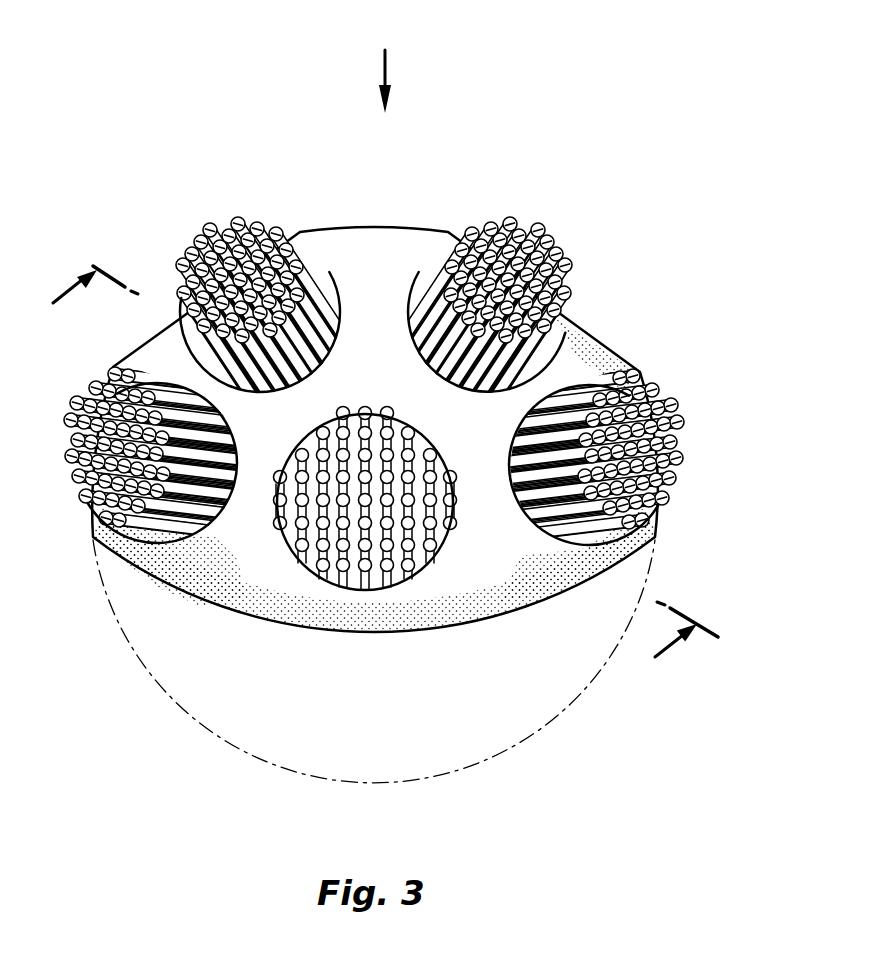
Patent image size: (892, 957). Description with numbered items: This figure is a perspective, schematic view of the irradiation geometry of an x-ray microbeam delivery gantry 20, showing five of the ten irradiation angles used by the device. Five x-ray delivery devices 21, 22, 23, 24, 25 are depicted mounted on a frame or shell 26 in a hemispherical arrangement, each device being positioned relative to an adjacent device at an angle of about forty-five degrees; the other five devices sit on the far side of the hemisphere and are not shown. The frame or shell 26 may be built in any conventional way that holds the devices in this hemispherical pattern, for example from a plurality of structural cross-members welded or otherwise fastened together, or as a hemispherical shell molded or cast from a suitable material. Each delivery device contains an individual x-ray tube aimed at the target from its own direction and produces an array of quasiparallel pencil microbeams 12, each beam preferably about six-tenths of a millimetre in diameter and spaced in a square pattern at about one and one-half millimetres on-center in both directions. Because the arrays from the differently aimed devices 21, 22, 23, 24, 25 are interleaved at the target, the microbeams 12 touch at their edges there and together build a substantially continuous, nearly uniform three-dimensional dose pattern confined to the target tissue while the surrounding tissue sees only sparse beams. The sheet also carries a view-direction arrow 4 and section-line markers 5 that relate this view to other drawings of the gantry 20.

The x-ray delivery gantry 20 is at (213, 160).
The quasiparallel pencil microbeams 12 is at (563, 262).
The x-ray delivery device 21 is at (344, 317).
The x-ray delivery device 22 is at (410, 322).
The x-ray delivery device 23 is at (423, 592).
The x-ray delivery device 24 is at (575, 550).
The x-ray delivery device 25 is at (197, 543).
The frame or shell 26 is at (606, 360).
The view direction of FIG. 4 is at (385, 65).
The section line of FIG. 5 is at (369, 476).